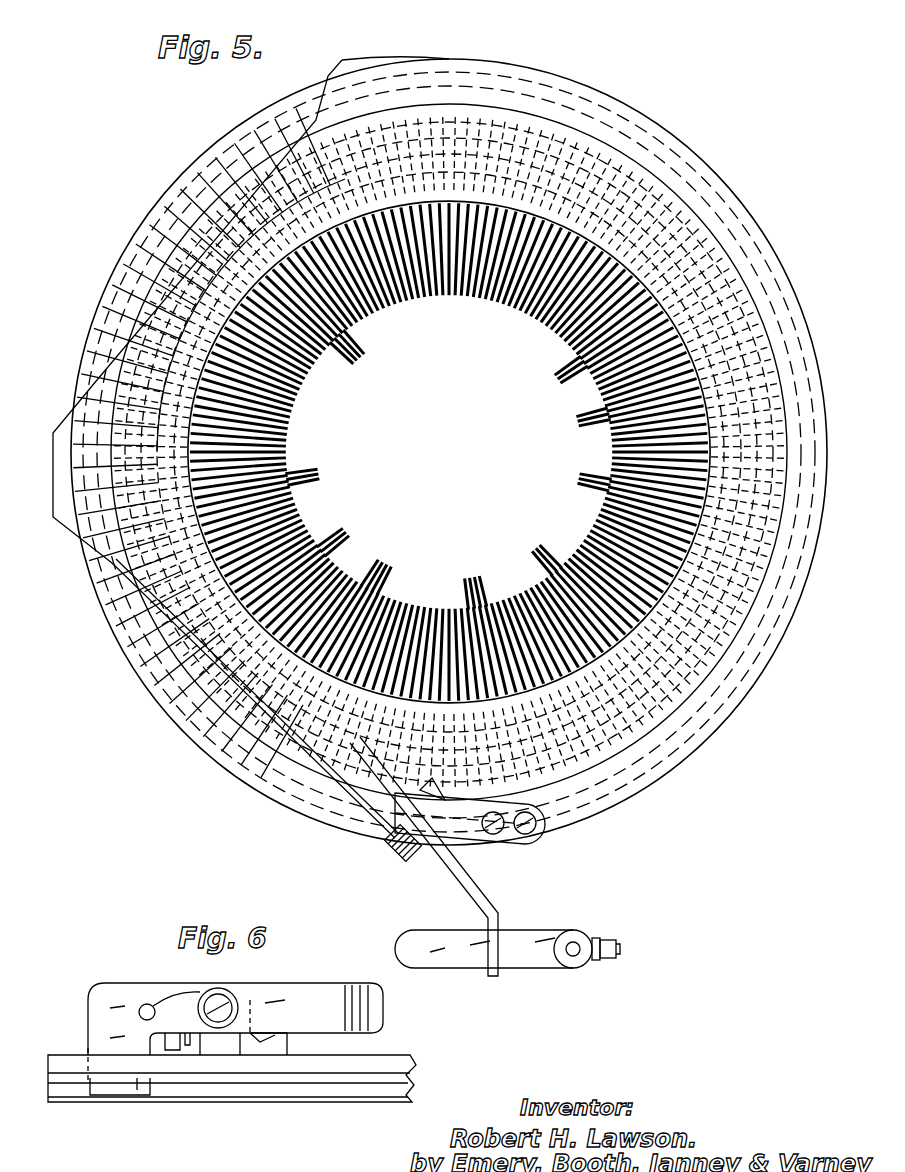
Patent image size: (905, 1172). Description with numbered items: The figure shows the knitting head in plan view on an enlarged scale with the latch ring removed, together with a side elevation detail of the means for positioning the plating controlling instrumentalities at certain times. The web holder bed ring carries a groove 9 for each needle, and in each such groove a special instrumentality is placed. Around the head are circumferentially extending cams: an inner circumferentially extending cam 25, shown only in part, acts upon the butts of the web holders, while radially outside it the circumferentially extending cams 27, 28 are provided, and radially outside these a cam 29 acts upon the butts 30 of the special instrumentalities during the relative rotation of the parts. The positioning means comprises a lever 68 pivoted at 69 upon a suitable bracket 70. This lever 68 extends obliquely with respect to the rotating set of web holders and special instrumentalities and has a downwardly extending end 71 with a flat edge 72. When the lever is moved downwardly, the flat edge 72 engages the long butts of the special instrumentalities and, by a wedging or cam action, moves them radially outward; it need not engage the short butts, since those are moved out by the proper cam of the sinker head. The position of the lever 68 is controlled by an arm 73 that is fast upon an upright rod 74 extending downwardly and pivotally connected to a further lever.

In FIG. 5, the groove 9 is at (272, 409).
In FIG. 5, the inner circumferentially extending cam 25 is at (456, 452).
In FIG. 5, the circumferentially extending cam 27 is at (447, 543).
In FIG. 5, the circumferentially extending cam 28 is at (461, 452).
In FIG. 5, the cam 29 is at (462, 452).
In FIG. 5, the butts of the special instrumentalities 30 is at (243, 160).
In FIG. 6, the lever 68 is at (158, 975).
In FIG. 5, the pivot 69 is at (398, 852).
In FIG. 6, the pivot 69 is at (220, 1000).
In FIG. 5, the bracket 70 is at (445, 838).
In FIG. 6, the bracket 70 is at (222, 1045).
In FIG. 5, the downwardly extending end 71 is at (335, 762).
In FIG. 6, the downwardly extending end 71 is at (92, 1050).
In FIG. 6, the flat edge 72 is at (122, 1090).
In FIG. 5, the arm 73 is at (518, 935).
In FIG. 5, the upright rod 74 is at (575, 947).